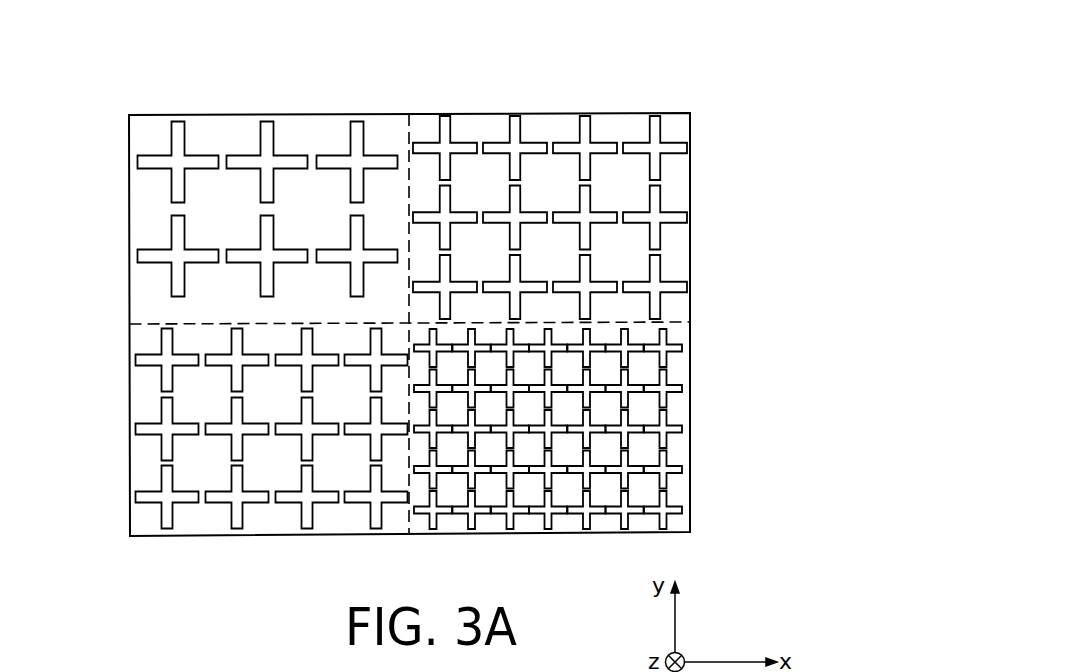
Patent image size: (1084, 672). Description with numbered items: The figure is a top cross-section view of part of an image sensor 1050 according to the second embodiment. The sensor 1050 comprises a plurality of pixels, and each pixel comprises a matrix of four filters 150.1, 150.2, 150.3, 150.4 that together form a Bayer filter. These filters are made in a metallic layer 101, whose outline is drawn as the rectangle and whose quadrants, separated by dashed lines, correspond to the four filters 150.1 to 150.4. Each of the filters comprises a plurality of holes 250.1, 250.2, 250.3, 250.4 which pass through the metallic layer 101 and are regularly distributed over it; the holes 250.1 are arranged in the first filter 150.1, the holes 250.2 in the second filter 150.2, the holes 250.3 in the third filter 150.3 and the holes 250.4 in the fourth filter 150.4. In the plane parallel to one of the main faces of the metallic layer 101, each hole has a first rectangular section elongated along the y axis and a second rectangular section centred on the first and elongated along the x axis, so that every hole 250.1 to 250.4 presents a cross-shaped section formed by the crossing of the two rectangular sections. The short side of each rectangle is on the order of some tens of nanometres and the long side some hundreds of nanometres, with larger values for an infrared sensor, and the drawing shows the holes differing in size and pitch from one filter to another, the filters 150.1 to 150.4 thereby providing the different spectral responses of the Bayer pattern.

The image sensor 1050 is at (693, 85).
The metallic layer 101 is at (690, 303).
The filter 150.1 is at (122, 176).
The filter 150.2 is at (124, 463).
The filter 150.3 is at (696, 245).
The filter 150.4 is at (697, 388).
The hole 250.1 is at (174, 128).
The hole 250.2 is at (143, 362).
The hole 250.3 is at (687, 144).
The hole 250.4 is at (680, 466).